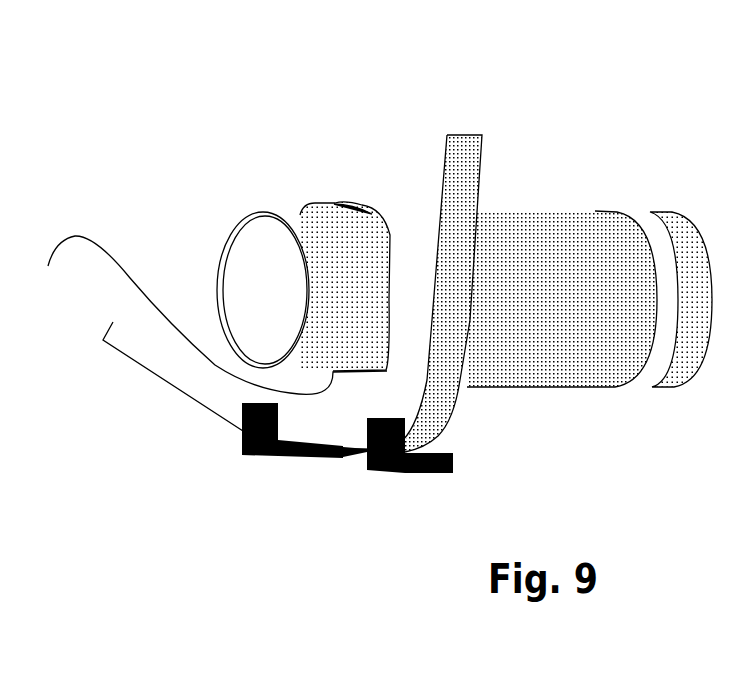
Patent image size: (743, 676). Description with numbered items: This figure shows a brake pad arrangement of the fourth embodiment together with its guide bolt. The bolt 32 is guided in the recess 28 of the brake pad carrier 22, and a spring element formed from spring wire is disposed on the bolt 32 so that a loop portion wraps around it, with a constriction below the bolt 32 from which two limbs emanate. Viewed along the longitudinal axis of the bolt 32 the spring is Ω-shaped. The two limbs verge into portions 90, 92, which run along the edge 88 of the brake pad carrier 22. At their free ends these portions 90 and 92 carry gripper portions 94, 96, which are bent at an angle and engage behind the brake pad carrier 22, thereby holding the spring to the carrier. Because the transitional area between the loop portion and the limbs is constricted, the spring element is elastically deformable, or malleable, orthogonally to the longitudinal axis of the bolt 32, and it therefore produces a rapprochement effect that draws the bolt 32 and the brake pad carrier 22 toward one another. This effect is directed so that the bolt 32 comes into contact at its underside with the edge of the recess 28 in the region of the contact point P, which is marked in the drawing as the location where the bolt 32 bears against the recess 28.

The brake pad carrier 22 is at (103, 340).
The recess 28 is at (335, 203).
The bolt 32 is at (517, 222).
The edge 88 is at (450, 337).
The portion 90 is at (446, 471).
The portion 92 is at (298, 458).
The gripper portion 94 is at (243, 456).
The gripper portion 96 is at (363, 463).
The contact point P is at (214, 315).